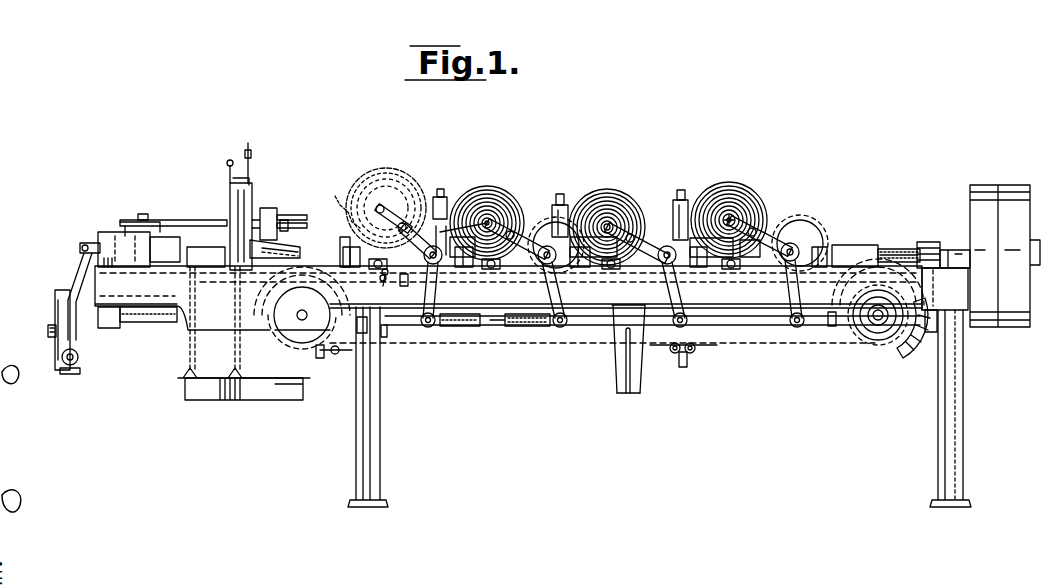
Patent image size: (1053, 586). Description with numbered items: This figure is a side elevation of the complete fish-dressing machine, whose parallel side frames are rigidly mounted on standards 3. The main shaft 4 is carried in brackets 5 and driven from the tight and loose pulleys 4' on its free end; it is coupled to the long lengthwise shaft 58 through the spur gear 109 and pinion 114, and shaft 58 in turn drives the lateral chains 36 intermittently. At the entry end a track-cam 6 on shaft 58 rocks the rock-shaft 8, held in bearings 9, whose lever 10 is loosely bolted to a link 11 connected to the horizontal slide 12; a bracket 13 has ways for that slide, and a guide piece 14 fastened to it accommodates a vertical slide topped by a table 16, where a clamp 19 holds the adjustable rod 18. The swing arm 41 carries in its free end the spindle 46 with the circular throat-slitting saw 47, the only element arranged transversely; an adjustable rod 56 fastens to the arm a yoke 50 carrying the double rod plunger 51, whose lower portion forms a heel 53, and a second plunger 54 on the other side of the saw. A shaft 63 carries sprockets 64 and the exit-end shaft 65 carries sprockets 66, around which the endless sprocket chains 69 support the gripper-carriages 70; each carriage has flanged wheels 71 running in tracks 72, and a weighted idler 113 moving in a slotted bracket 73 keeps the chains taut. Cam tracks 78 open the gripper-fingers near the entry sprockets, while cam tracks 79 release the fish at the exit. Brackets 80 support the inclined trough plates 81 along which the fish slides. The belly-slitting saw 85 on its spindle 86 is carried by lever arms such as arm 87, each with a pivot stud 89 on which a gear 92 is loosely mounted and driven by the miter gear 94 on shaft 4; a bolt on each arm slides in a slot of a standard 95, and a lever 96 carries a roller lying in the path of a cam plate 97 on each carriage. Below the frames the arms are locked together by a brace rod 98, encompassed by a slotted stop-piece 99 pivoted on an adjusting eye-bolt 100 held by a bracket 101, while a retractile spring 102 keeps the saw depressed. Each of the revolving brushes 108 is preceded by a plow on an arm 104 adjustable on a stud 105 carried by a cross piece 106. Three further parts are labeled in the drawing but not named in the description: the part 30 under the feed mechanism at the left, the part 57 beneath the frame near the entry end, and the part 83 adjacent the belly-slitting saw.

The standards 3 is at (381, 407).
The main shaft 4 is at (899, 246).
The pulleys 4' is at (1005, 245).
The brackets 5 is at (950, 250).
The track-cam 6 is at (58, 312).
The rock-shaft 8 is at (64, 372).
The bearings 9 is at (62, 357).
The lever 10 is at (48, 331).
The link 11 is at (82, 243).
The horizontal slide 12 is at (172, 246).
The bracket 13 is at (104, 232).
The guide piece 14 is at (122, 230).
The table 16 is at (126, 226).
The adjustable rod 18 is at (165, 221).
The clamp 19 is at (145, 213).
The feed mechanism 30 is at (212, 262).
The lateral chains 36 is at (235, 370).
The swing arm 41 is at (270, 209).
The spindle 46 is at (306, 225).
The throat-slitting saw 47 is at (238, 200).
The yoke 50 is at (251, 190).
The double rod plunger 51 is at (249, 150).
The heel 53 is at (300, 253).
The plunger 54 is at (227, 167).
The adjustable rod 56 is at (292, 215).
The block 57 is at (110, 328).
The shaft 58 is at (140, 322).
The shaft 63 is at (300, 318).
The sprockets 64 is at (300, 343).
The shaft 65 is at (872, 328).
The sprockets 66 is at (884, 340).
The endless sprocket chain 69 is at (528, 330).
The gripper-carriage 70 is at (335, 354).
The flanged wheels 71 is at (674, 353).
The tracks 72 is at (903, 358).
The slotted bracket 73 is at (622, 392).
The cam tracks 78 is at (270, 300).
The cam tracks 79 is at (828, 322).
The brackets 80 is at (362, 262).
The trough plates 81 is at (340, 242).
The link 83 is at (375, 212).
The slitting saw 85 is at (372, 178).
The spindle 86 is at (345, 203).
The lever arm 87 is at (440, 226).
The pivot stud 89 is at (505, 240).
The gear 92 is at (545, 230).
The miter gear 94 is at (447, 205).
The standard 95 is at (470, 195).
The lever 96 is at (385, 276).
The cam plate 97 is at (318, 352).
The brace rod 98 is at (436, 324).
The slotted stop-piece 99 is at (428, 328).
The adjusting eye-bolt 100 is at (373, 333).
The bracket 101 is at (384, 340).
The retractile spring 102 is at (474, 328).
The arm 104 is at (556, 205).
The stud 105 is at (450, 190).
The cross piece 106 is at (462, 182).
The brushes 108 is at (505, 198).
The spur gear 109 is at (937, 328).
The weighted idler 113 is at (614, 345).
The pinion 114 is at (927, 242).